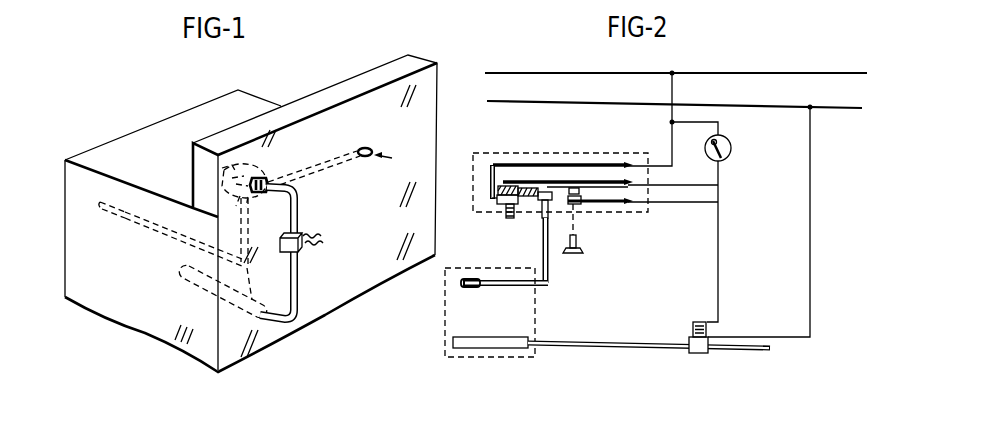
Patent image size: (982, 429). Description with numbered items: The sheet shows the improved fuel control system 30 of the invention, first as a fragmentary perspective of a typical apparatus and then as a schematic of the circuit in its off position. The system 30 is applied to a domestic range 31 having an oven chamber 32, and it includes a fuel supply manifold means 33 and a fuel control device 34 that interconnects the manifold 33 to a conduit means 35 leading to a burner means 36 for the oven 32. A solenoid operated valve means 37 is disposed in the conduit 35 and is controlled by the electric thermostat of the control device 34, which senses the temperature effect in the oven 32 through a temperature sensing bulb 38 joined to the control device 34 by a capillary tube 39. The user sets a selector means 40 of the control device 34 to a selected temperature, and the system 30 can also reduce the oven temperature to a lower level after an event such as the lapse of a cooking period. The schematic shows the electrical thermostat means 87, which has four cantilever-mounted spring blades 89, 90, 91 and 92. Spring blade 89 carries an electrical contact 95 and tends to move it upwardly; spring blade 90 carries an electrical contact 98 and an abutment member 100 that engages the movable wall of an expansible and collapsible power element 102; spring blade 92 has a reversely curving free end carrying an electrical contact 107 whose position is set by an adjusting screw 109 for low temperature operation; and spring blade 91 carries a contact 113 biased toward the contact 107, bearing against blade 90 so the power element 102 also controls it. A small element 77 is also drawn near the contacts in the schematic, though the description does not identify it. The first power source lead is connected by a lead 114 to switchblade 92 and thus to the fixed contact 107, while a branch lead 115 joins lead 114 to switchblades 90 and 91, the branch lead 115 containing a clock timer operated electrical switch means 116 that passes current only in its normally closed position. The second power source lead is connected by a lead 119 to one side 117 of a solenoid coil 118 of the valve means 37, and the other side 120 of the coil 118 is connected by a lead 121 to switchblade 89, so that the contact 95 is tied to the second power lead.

In FIG. 1, the fuel control system 30 is at (289, 136).
In FIG. 2, the fuel control system 30 is at (806, 55).
In FIG. 1, the domestic range 31 is at (136, 98).
In FIG. 1, the oven chamber 32 is at (120, 293).
In FIG. 2, the oven chamber 32 is at (445, 348).
In FIG. 1, the fuel supply manifold means 33 is at (360, 145).
In FIG. 1, the fuel control device 34 is at (250, 163).
In FIG. 1, the conduit means 35 is at (302, 211).
In FIG. 2, the conduit means 35 is at (622, 350).
In FIG. 1, the burner means 36 is at (188, 290).
In FIG. 2, the burner means 36 is at (468, 349).
In FIG. 1, the solenoid operated valve means 37 is at (301, 245).
In FIG. 2, the solenoid operated valve means 37 is at (698, 355).
In FIG. 1, the temperature sensing bulb 38 is at (115, 200).
In FIG. 2, the temperature sensing bulb 38 is at (461, 283).
In FIG. 1, the capillary tube 39 is at (143, 227).
In FIG. 2, the capillary tube 39 is at (487, 286).
In FIG. 1, the selector means 40 is at (226, 160).
In FIG. 2, the contact 77 is at (583, 252).
In FIG. 2, the electrical thermostat means 87 is at (541, 147).
In FIG. 2, the spring blade 89 is at (632, 204).
In FIG. 2, the spring blade 90 is at (600, 190).
In FIG. 2, the spring blade 91 is at (497, 168).
In FIG. 2, the spring blade 92 is at (549, 180).
In FIG. 2, the electrical contact 95 is at (567, 196).
In FIG. 2, the electrical contact 98 is at (577, 195).
In FIG. 2, the abutment member 100 is at (540, 215).
In FIG. 2, the power element 102 is at (553, 212).
In FIG. 2, the electrical contact 107 is at (503, 201).
In FIG. 2, the adjusting screw 109 is at (510, 218).
In FIG. 2, the contact 113 is at (500, 188).
In FIG. 2, the lead 114 is at (670, 123).
In FIG. 2, the branch lead 115 is at (718, 185).
In FIG. 2, the clock timer operated electrical switch means 116 is at (731, 150).
In FIG. 2, the side of solenoid coil 117 is at (713, 335).
In FIG. 2, the solenoid coil 118 is at (690, 330).
In FIG. 2, the lead 119 is at (810, 232).
In FIG. 2, the other side of solenoid coil 120 is at (717, 305).
In FIG. 2, the lead 121 is at (718, 250).